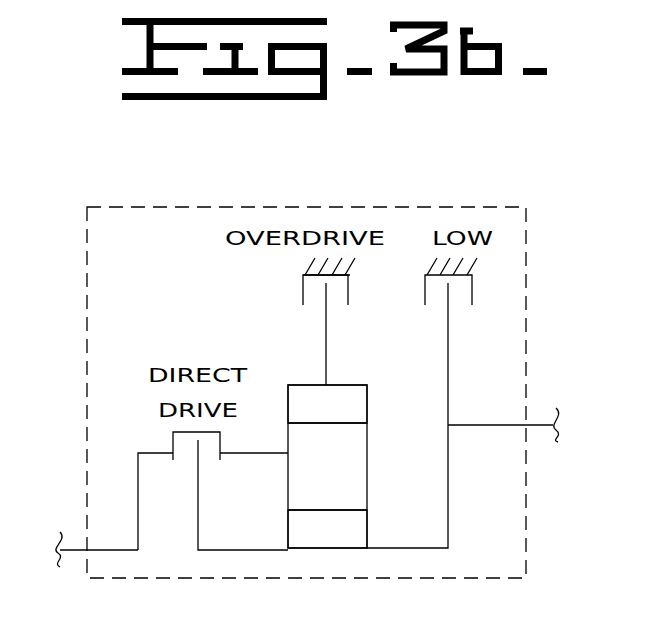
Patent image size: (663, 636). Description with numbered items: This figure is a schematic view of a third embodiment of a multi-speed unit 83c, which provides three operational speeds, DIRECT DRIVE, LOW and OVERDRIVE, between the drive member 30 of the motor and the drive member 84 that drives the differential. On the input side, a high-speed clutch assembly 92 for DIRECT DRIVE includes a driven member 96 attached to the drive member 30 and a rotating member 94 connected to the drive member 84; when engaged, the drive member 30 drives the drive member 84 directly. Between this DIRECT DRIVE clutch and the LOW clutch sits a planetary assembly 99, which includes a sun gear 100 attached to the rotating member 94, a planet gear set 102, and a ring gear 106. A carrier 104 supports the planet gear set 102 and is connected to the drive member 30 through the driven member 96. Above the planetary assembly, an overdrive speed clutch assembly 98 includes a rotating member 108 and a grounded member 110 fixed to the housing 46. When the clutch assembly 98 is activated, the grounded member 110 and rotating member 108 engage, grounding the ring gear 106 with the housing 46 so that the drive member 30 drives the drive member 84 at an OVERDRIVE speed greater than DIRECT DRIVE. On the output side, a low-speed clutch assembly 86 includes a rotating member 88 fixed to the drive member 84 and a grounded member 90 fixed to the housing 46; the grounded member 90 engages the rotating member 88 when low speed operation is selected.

The multi-speed unit 83c is at (146, 203).
The drive member 30 is at (80, 550).
The high-speed clutch assembly 92 is at (120, 460).
The driven member 96 is at (172, 440).
The rotating member 94 is at (197, 525).
The carrier 104 is at (288, 452).
The planetary assembly 99 is at (275, 373).
The planet gear set 102 is at (348, 480).
The ring gear 106 is at (345, 405).
The sun gear 100 is at (330, 530).
The rotating member 108 is at (325, 350).
The grounded member 110 is at (303, 296).
The overdrive speed clutch assembly 98 is at (380, 261).
The housing 46 is at (348, 268).
The low-speed clutch assembly 86 is at (490, 326).
The grounded member 90 is at (425, 287).
The rotating member 88 is at (450, 507).
The drive member 84 is at (542, 423).